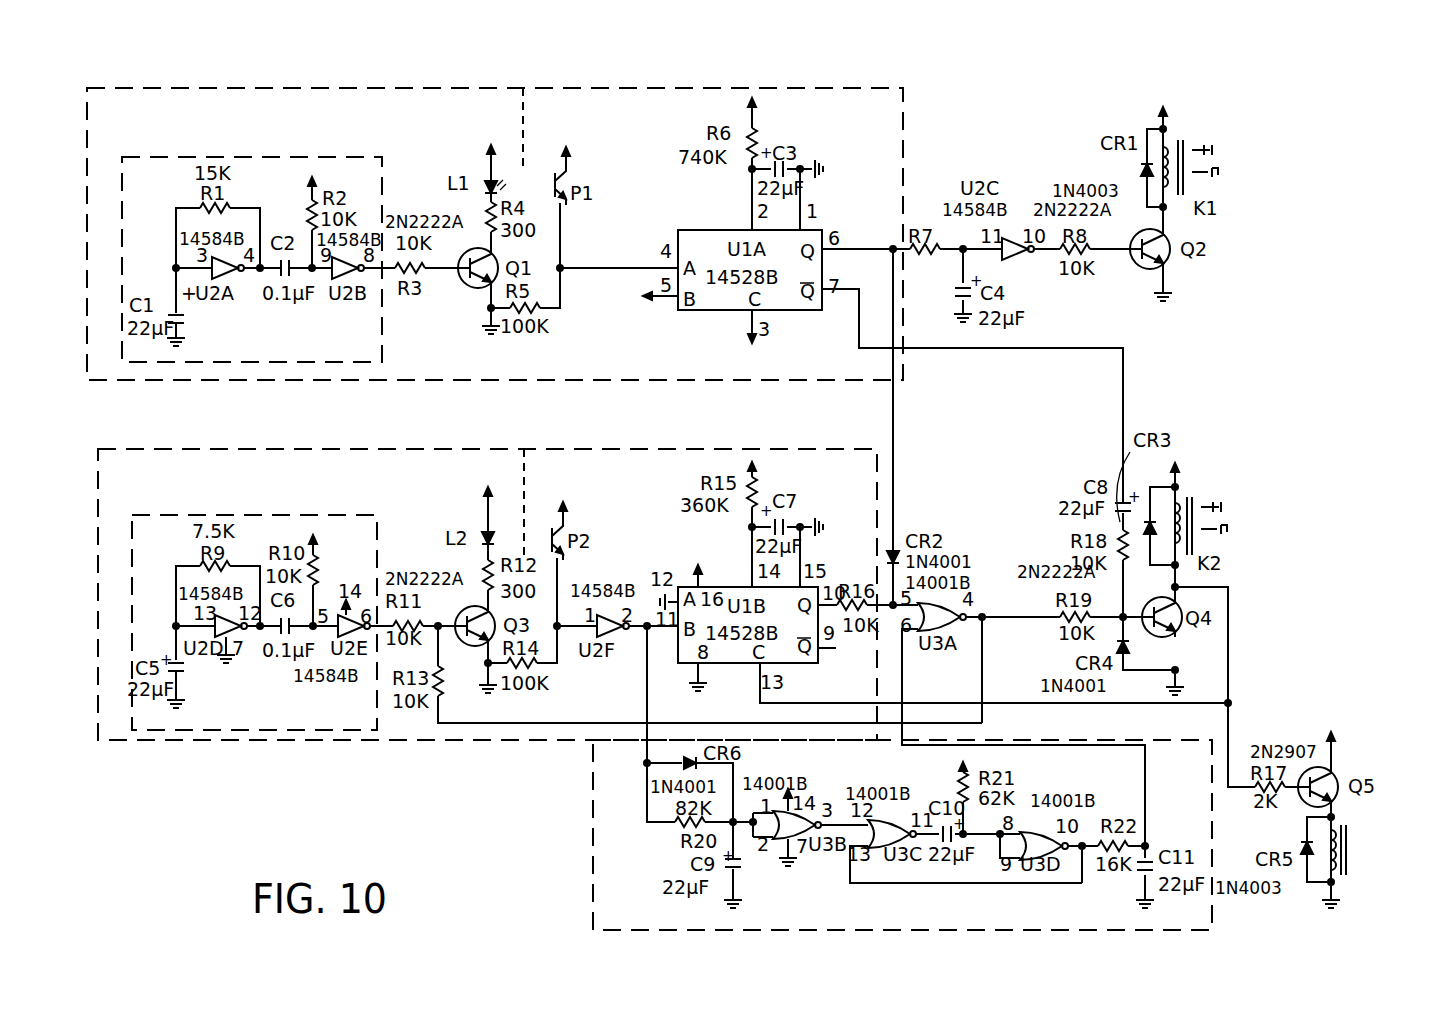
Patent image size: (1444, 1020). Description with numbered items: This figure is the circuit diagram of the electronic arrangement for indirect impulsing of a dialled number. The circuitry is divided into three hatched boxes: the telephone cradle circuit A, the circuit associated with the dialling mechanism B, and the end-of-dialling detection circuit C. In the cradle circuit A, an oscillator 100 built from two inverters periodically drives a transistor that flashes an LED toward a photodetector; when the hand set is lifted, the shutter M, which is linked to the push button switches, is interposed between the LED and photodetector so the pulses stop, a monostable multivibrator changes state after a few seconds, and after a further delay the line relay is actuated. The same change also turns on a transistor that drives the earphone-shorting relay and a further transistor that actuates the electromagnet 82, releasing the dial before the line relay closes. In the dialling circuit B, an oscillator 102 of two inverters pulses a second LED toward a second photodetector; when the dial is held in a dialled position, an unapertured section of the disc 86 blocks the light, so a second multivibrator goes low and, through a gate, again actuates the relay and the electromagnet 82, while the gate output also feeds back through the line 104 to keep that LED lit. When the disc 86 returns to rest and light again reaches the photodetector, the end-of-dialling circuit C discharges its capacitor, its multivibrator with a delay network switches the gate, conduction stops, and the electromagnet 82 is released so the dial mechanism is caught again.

The telephone cradle circuit A is at (297, 88).
The dialling mechanism circuit B is at (179, 449).
The end-of-dialling detection circuit C is at (593, 846).
The shutter M is at (506, 129).
The oscillator 100 is at (205, 157).
The oscillator 102 is at (302, 515).
The line 104 is at (982, 680).
The disc 86 is at (519, 496).
The electromagnet 82 is at (1350, 832).